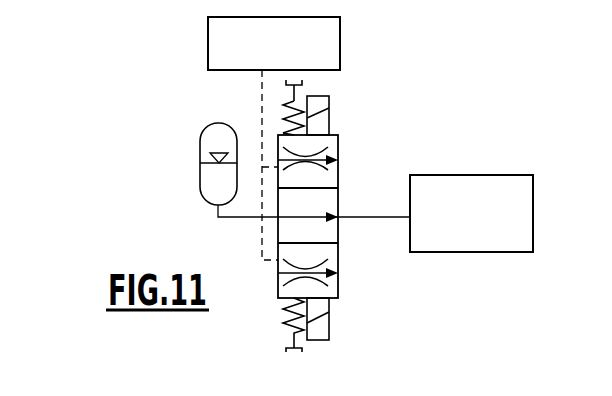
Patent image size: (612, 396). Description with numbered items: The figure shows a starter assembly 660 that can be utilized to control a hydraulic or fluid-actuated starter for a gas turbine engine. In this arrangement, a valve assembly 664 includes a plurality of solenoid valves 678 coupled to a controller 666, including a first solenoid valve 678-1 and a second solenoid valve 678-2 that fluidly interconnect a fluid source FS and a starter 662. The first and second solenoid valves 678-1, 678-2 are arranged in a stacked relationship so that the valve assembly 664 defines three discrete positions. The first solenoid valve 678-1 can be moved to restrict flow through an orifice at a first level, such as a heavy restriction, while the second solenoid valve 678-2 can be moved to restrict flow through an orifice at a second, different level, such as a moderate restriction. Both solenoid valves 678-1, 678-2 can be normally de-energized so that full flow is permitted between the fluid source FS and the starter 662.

The starter assembly 660 is at (148, 105).
The valve assembly 664 is at (235, 112).
The fluid source FS is at (200, 153).
The controller 666 is at (299, 54).
The starter 662 is at (497, 229).
The solenoid valves 678 is at (338, 148).
The first solenoid valve 678-1 is at (308, 158).
The second solenoid valve 678-2 is at (338, 285).